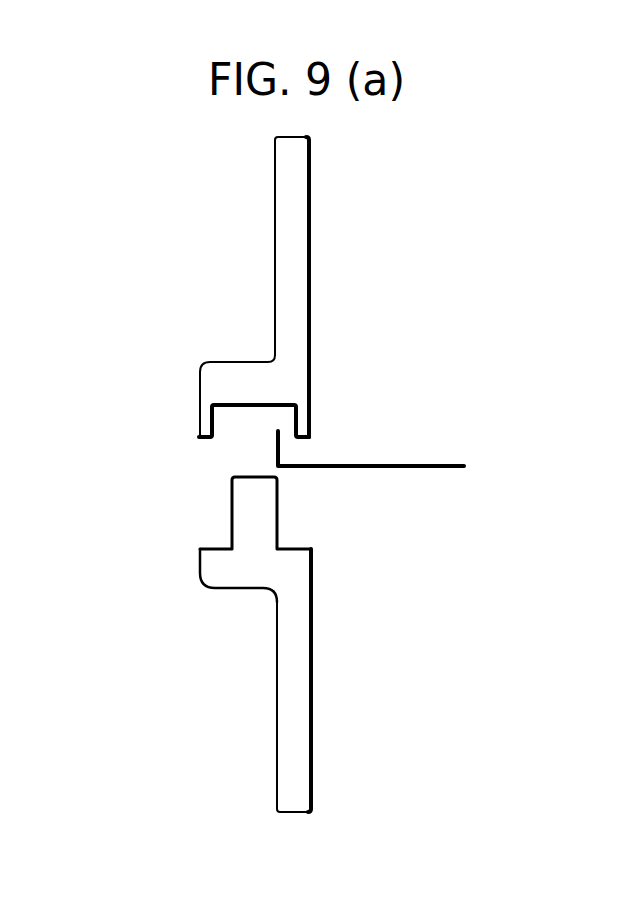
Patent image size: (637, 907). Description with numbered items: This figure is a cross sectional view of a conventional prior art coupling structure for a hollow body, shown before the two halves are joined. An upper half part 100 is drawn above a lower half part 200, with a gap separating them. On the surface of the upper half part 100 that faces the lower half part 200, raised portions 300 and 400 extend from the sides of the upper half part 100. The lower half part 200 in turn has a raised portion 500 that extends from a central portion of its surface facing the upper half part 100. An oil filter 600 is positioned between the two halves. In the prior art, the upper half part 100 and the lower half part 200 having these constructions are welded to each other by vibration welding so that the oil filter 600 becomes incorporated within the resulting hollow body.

The upper half part 100 is at (292, 276).
The lower half part 200 is at (293, 653).
The raised portion 300 is at (200, 421).
The raised portion 400 is at (302, 417).
The raised portion 500 is at (242, 512).
The oil filter 600 is at (423, 466).